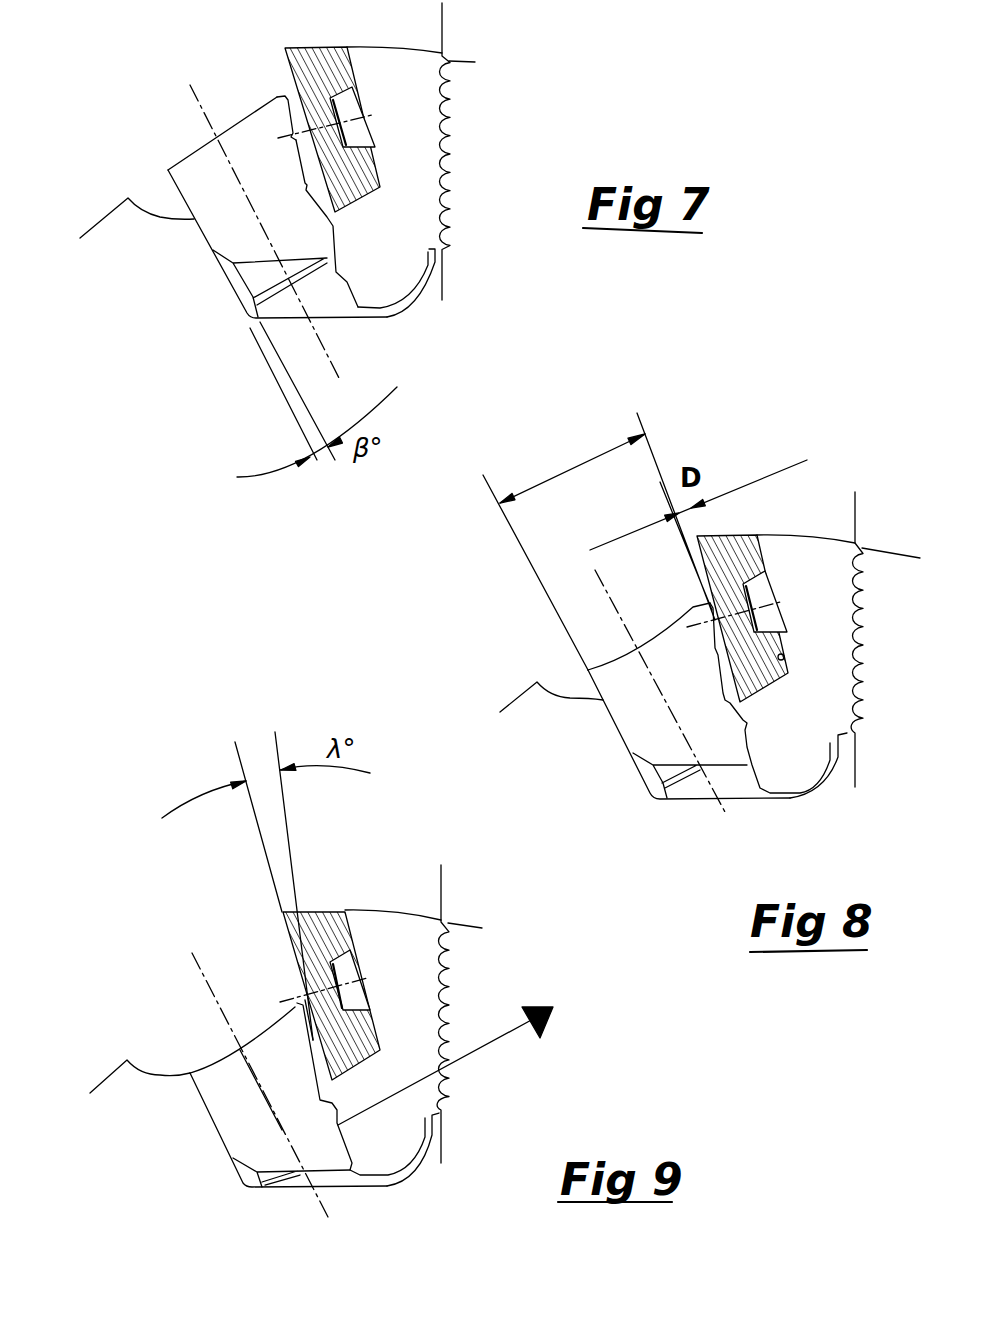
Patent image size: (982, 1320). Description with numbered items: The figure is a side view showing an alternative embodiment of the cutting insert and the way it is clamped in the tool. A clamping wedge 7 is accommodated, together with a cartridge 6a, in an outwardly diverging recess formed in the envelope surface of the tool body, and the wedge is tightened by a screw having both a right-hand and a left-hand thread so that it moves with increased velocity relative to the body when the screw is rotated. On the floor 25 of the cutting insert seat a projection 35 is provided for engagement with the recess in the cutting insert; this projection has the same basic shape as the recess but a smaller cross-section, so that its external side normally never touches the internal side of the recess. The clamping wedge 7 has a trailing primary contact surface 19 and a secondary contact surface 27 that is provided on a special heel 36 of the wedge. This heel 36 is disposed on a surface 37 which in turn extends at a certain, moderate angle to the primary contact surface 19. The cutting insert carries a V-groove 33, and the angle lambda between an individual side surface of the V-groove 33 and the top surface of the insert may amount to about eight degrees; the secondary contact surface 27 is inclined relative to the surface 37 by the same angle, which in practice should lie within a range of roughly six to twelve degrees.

In FIG. 7, the clamping wedge 7 is at (190, 158).
In FIG. 9, the clamping wedge 7 is at (227, 1118).
In FIG. 7, the secondary contact surface 27 is at (292, 107).
In FIG. 7, the heel 36 is at (287, 114).
In FIG. 7, the surface 37 is at (303, 157).
In FIG. 7, the primary contact surface 19 is at (328, 227).
In FIG. 7, the cartridge 6a is at (413, 290).
In FIG. 8, the projection 35 is at (763, 593).
In FIG. 9, the projection 35 is at (353, 967).
In FIG. 8, the floor 25 is at (784, 656).
In FIG. 9, the V-groove 33 is at (313, 1023).